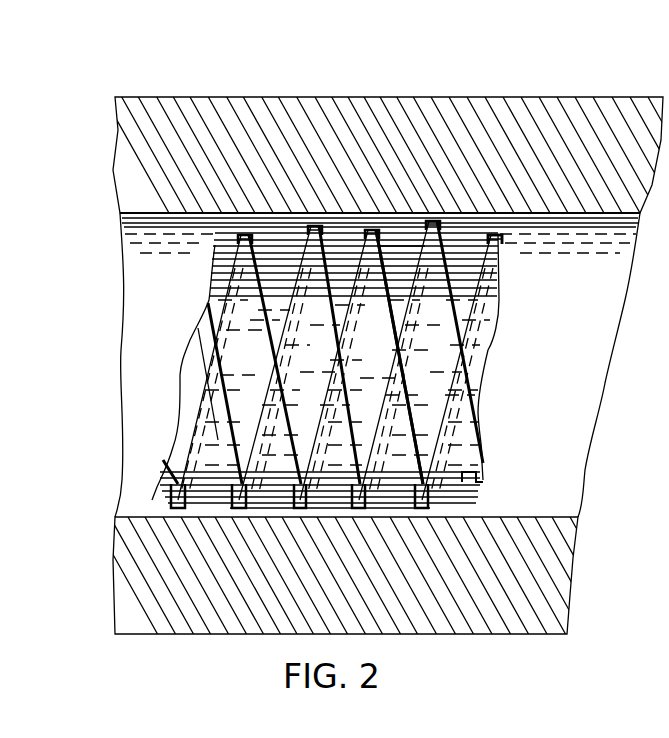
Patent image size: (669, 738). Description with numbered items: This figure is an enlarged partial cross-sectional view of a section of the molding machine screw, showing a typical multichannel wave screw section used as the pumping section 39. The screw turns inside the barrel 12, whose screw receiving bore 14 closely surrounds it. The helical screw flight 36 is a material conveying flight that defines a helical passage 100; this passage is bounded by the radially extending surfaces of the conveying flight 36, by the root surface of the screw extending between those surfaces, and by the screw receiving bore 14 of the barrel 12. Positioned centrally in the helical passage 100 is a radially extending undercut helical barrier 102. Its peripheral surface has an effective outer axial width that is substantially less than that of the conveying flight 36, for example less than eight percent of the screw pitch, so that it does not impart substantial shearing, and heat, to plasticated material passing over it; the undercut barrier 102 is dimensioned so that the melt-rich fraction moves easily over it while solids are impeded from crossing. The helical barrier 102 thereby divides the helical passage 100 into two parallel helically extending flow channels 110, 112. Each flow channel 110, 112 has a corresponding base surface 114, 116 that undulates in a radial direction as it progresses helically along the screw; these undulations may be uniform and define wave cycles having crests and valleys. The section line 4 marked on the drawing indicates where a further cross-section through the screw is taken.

The barrel 12 is at (342, 97).
The screw receiving bore 14 is at (167, 213).
The helical passage 100 is at (309, 346).
The helical barrier 102 is at (427, 510).
The flow channel 110 is at (273, 507).
The flow channel 112 is at (201, 495).
The base surface 114 is at (487, 237).
The base surface 116 is at (402, 250).
The helical screw flight 36 is at (243, 508).
The pumping section 39 is at (442, 355).
The section line 4- 4 is at (432, 57).